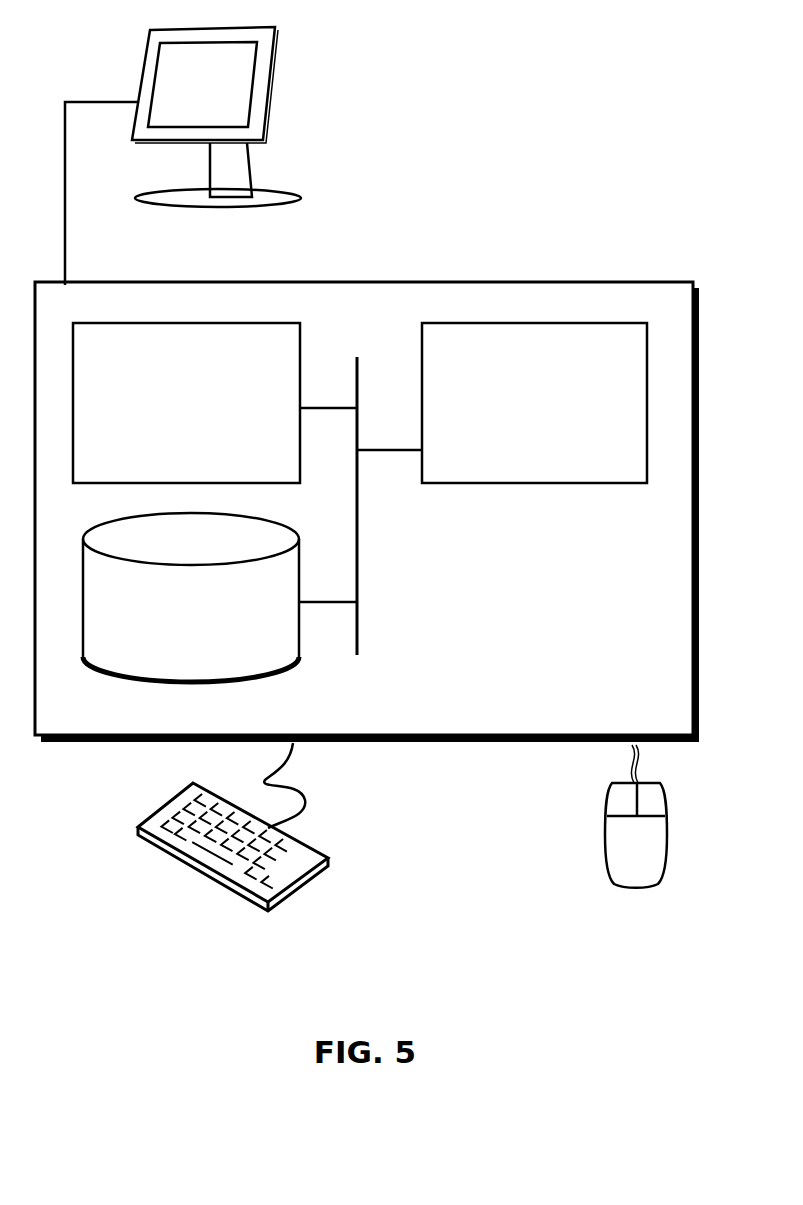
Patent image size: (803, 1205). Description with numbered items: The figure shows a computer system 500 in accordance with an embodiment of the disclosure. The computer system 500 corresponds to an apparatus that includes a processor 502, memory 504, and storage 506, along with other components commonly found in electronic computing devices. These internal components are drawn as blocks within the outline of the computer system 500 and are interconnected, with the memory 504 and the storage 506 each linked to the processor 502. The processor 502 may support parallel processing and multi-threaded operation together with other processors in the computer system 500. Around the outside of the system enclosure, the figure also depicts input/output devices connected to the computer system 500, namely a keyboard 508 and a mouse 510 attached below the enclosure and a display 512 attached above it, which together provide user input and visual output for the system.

The computer system 500 is at (412, 260).
The processor 502 is at (534, 403).
The memory 504 is at (186, 403).
The storage 506 is at (191, 597).
The keyboard 508 is at (157, 847).
The mouse 510 is at (636, 816).
The display 512 is at (183, 156).